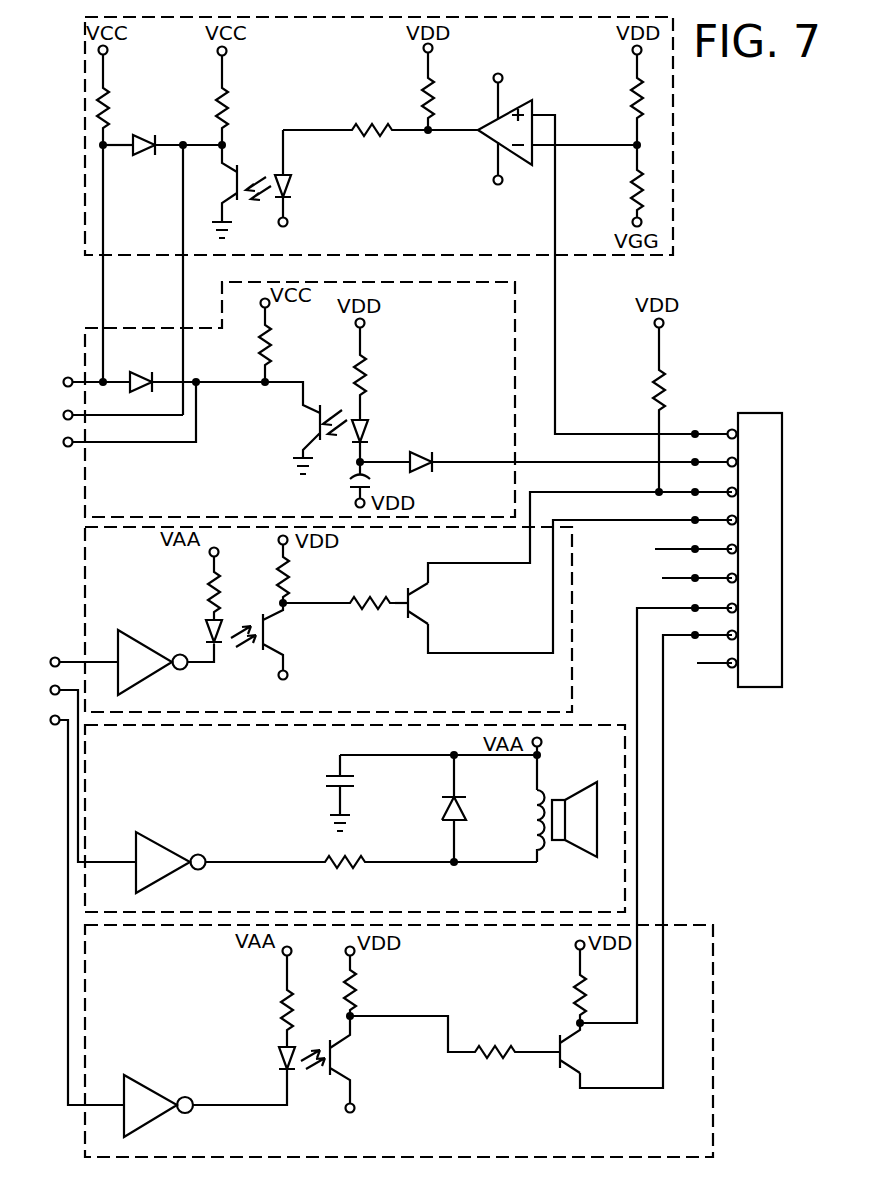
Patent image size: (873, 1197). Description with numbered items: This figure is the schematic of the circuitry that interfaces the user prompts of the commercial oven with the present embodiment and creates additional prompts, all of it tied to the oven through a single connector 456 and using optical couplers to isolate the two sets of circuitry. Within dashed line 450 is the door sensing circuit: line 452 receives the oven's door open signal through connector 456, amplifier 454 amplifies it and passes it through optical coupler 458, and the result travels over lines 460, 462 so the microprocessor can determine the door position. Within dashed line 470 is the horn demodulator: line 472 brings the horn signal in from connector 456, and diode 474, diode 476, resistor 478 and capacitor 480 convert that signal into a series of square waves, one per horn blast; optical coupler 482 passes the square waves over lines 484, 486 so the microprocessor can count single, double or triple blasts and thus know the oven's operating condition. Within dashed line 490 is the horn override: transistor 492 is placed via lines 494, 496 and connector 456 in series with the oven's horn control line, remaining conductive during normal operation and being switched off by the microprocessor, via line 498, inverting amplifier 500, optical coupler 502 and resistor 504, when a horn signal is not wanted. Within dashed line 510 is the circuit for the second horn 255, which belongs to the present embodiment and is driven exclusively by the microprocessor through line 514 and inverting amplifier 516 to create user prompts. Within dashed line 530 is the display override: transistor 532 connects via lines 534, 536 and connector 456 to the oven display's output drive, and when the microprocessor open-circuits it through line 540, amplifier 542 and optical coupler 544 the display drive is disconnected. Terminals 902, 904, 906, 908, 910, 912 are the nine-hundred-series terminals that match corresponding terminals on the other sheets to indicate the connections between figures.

The dashed line (door sensing circuitry) 450 is at (673, 182).
The line 452 is at (555, 213).
The amplifier 454 is at (510, 107).
The connector 456 is at (752, 412).
The optical coupler 458 is at (263, 156).
The line 460 is at (183, 286).
The line 462 is at (105, 195).
The dashed line (horn demodulator circuitry) 470 is at (515, 342).
The line 472 is at (471, 460).
The diode 474 is at (437, 466).
The diode 476 is at (368, 420).
The resistor 478 is at (365, 386).
The capacitor 480 is at (357, 480).
The optical coupler 482 is at (337, 464).
The line 484 is at (198, 430).
The line 486 is at (90, 372).
The dashed line (horn override circuitry) 490 is at (573, 598).
The transistor 492 is at (408, 617).
The line 494 is at (460, 563).
The line 496 is at (510, 654).
The line 498 is at (100, 657).
The inverting amplifier 500 is at (145, 682).
The optical coupler 502 is at (251, 604).
The resistor 504 is at (370, 568).
The dashed line (second horn circuitry) 510 is at (625, 786).
The line 514 is at (108, 861).
The inverting amplifier 516 is at (160, 843).
The horn 255 is at (603, 750).
The dashed line (display override circuitry) 530 is at (683, 925).
The transistor 532 is at (570, 1068).
The line 534 is at (608, 1022).
The line 536 is at (624, 1088).
The line 540 is at (100, 1105).
The amplifier 542 is at (150, 1088).
The optical coupler 544 is at (319, 1087).
The terminal 902 is at (44, 385).
The terminal 904 is at (99, 418).
The terminal 906 is at (44, 445).
The terminal 908 is at (31, 664).
The terminal 910 is at (32, 692).
The terminal 912 is at (35, 722).